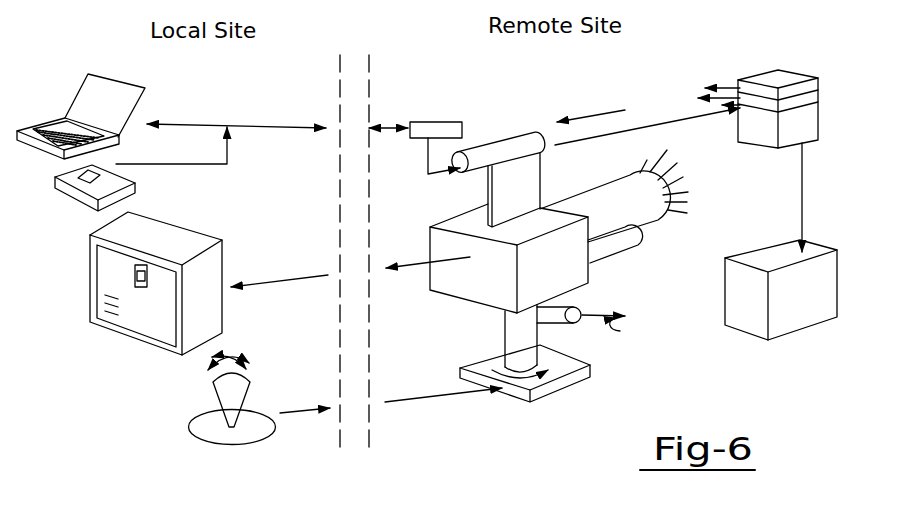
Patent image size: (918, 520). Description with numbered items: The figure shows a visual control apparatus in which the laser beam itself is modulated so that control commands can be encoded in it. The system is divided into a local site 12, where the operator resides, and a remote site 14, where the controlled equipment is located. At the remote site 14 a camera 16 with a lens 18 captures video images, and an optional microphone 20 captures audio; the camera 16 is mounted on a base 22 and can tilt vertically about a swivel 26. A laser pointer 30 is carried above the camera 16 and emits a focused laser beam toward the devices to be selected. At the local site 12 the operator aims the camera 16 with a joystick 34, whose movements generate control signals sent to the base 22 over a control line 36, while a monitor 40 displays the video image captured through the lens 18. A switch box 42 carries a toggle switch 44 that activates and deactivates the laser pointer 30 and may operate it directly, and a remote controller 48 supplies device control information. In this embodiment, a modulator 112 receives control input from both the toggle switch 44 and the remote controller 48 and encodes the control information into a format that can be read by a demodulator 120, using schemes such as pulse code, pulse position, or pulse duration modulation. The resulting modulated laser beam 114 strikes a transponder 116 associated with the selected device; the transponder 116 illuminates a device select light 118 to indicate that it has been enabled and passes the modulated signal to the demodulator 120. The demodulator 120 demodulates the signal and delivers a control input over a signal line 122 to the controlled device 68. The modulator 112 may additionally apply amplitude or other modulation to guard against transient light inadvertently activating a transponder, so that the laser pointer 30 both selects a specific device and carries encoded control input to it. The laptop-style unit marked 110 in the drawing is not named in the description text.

The local site 12 is at (297, 81).
The remote site 14 is at (433, 62).
The camera 16 is at (577, 276).
The lens 18 is at (617, 202).
The microphone 20 is at (633, 238).
The base 22 is at (591, 374).
The swivel 26 is at (548, 322).
The laser pointer 30 is at (478, 160).
The joystick 34 is at (252, 427).
The control line 36 is at (452, 396).
The monitor 40 is at (153, 348).
The switch box 42 is at (69, 204).
The toggle switch 44 is at (84, 176).
The remote controller 48 is at (33, 128).
The controlled device 68 is at (803, 292).
The laptop computer 110 is at (79, 90).
The modulator 112 is at (447, 96).
The modulated laser beam 114 is at (703, 120).
The transponder 116 is at (768, 102).
The device select light 118 is at (788, 73).
The demodulator 120 is at (773, 138).
The signal line 122 is at (802, 203).